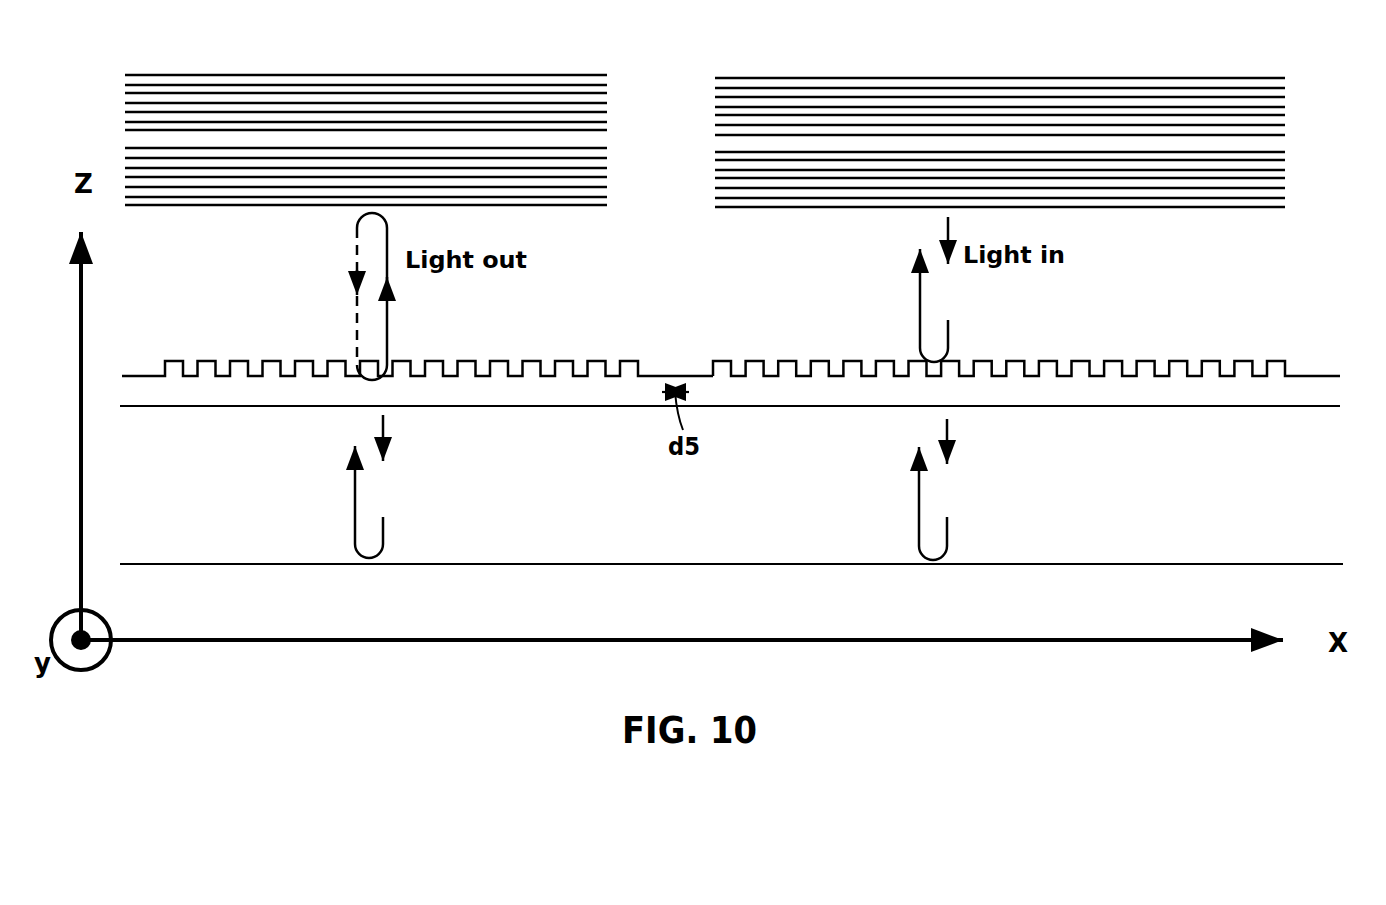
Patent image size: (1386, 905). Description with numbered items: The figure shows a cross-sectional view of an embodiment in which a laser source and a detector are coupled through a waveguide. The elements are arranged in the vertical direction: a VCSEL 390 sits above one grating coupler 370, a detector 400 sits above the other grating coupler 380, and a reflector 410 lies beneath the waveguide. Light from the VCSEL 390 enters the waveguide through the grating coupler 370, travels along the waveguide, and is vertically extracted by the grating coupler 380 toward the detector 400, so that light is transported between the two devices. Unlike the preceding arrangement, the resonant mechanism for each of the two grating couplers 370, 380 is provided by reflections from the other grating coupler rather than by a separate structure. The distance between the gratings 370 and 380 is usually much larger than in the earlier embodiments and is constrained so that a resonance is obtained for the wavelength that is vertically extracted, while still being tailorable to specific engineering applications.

The detector 400 is at (580, 75).
The VCSEL 390 is at (1255, 78).
The grating coupler 380 is at (168, 343).
The grating coupler 370 is at (1281, 345).
The reflector 410 is at (1283, 563).